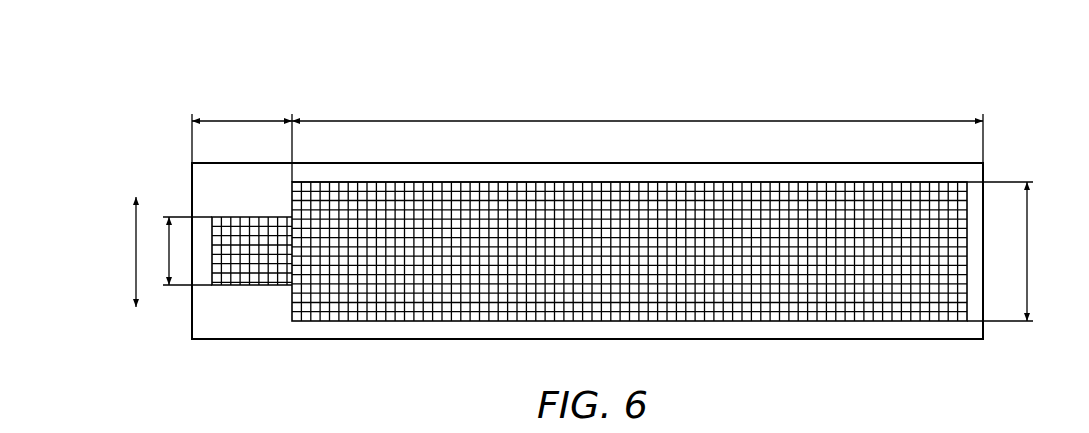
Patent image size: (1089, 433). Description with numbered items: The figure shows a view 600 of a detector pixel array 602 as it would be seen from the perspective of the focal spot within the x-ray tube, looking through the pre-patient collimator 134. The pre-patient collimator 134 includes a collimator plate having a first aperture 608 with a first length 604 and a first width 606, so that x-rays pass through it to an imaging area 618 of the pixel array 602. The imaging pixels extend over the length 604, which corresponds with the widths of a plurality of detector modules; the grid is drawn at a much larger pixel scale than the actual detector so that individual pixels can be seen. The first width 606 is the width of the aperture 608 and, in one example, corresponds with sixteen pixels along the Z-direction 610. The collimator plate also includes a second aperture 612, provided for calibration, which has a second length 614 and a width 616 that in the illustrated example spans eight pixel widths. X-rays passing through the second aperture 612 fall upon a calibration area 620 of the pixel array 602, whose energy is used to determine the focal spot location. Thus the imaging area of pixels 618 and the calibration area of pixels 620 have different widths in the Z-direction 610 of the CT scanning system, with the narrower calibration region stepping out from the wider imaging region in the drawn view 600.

The view 600 is at (988, 76).
The pre-patient collimator 134 is at (977, 173).
The detector pixel array 602 is at (662, 288).
The imaging area 618 is at (438, 271).
The first aperture 608 is at (852, 181).
The calibration area 620 is at (238, 259).
The second aperture 612 is at (245, 294).
The second length 614 is at (240, 120).
The first length 604 is at (800, 120).
The width 616 is at (165, 238).
The first width 606 is at (1027, 253).
The Z-direction 610 is at (130, 277).